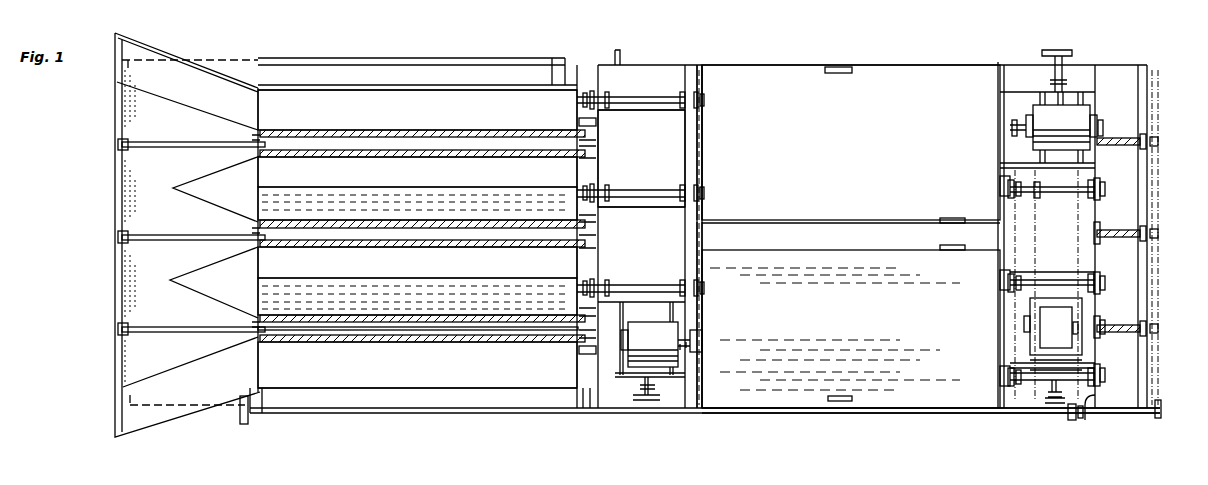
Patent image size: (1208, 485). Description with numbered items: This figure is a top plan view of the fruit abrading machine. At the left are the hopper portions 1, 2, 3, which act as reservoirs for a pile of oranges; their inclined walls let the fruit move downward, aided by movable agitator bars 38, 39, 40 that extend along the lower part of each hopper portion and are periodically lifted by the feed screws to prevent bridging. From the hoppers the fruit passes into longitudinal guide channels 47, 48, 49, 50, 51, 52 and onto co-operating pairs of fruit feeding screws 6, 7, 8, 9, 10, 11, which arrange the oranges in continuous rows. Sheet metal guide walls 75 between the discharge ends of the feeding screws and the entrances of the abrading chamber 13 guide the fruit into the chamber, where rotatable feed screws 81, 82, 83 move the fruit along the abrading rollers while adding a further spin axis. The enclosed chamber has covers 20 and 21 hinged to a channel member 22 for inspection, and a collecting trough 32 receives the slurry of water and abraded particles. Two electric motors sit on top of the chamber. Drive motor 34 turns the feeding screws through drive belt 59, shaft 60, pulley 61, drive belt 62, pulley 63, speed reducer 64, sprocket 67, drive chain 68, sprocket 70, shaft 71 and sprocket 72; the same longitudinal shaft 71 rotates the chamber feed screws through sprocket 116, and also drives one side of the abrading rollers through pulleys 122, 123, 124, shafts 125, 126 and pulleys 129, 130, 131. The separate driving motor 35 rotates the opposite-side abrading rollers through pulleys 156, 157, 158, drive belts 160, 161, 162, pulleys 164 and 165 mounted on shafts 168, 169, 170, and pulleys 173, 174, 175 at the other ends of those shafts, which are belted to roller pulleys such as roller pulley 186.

The hopper portion 1 is at (133, 355).
The hopper portion 2 is at (135, 265).
The hopper portion 3 is at (128, 126).
The fruit feeding screw 6 is at (347, 342).
The fruit feeding screw 7 is at (362, 318).
The fruit feeding screw 8 is at (348, 247).
The fruit feeding screw 9 is at (352, 222).
The fruit feeding screw 10 is at (375, 155).
The fruit feeding screw 11 is at (342, 130).
The abrading chamber 13 is at (899, 59).
The cover 20 is at (851, 329).
The cover 21 is at (851, 144).
The channel member 22 is at (900, 234).
The collecting trough 32 is at (1130, 295).
The drive motor 34 is at (1047, 130).
The driving motor 35 is at (650, 351).
The agitator bar 38 is at (174, 330).
The agitator bar 39 is at (167, 234).
The agitator bar 40 is at (178, 145).
The longitudinal guide channel 47 is at (417, 365).
The longitudinal guide channel 48 is at (417, 296).
The longitudinal guide channel 49 is at (417, 262).
The longitudinal guide channel 50 is at (417, 203).
The longitudinal guide channel 51 is at (417, 172).
The longitudinal guide channel 52 is at (417, 110).
The drive belt 59 is at (1012, 143).
The shaft 60 is at (1072, 187).
The pulley 61 is at (1040, 190).
The drive belt 62 is at (1036, 225).
The pulley 63 is at (1024, 324).
The speed reducer 64 is at (1052, 334).
The sprocket 67 is at (1080, 322).
The drive chain 68 is at (1085, 418).
The sprocket 70 is at (1075, 420).
The shaft 71 is at (862, 414).
The sprocket 72 is at (240, 418).
The sheet metal guide wall 75 is at (598, 122).
The feed screw 81 is at (1114, 333).
The feed screw 82 is at (1114, 238).
The feed screw 83 is at (1120, 146).
The sprocket 116 is at (1162, 415).
The pulley 122 is at (1002, 182).
The pulley 123 is at (1002, 280).
The pulley 124 is at (1030, 376).
The shaft 125 is at (1070, 268).
The shaft 126 is at (1030, 385).
The pulley 129 is at (1100, 192).
The pulley 130 is at (1100, 286).
The pulley 131 is at (1100, 378).
The pulley 156 is at (692, 355).
The pulley 157 is at (695, 355).
The pulley 158 is at (703, 342).
The drive belt 160 is at (702, 312).
The drive belt 161 is at (702, 262).
The drive belt 162 is at (702, 138).
The pulley 164 is at (702, 288).
The pulley 165 is at (702, 192).
The shaft 168 is at (630, 277).
The shaft 169 is at (641, 158).
The shaft 170 is at (655, 97).
The pulley 173 is at (590, 282).
The pulley 174 is at (592, 190).
The pulley 175 is at (590, 99).
The roller pulley 186 is at (702, 97).